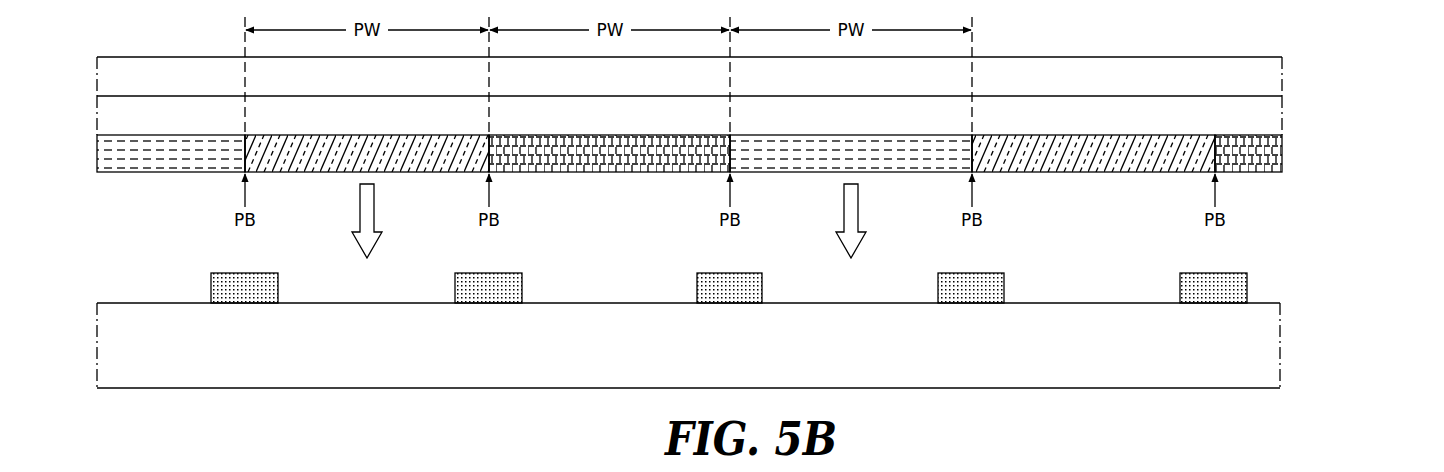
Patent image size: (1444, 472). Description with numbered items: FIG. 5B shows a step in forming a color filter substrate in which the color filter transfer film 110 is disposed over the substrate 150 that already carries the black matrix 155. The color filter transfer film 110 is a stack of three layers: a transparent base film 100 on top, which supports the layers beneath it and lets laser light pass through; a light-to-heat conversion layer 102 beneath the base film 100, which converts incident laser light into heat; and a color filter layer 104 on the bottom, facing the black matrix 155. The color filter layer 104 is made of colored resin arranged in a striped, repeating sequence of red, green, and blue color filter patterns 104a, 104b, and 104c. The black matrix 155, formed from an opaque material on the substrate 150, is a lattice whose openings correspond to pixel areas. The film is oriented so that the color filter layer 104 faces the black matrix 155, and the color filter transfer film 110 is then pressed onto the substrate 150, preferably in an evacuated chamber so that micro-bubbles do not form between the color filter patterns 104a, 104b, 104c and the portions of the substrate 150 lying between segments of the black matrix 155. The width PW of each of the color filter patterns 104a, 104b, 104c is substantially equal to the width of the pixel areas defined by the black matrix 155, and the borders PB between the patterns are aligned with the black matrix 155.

The base film 100 is at (1270, 78).
The light-to-heat conversion (LTHC) layer 102 is at (1270, 118).
The color filter layer 104 is at (734, 191).
The red color filter pattern 104a is at (310, 150).
The green color filter pattern 104b is at (593, 150).
The blue color filter pattern 104c is at (142, 150).
The color filter transfer film 110 is at (755, 152).
The substrate 150 is at (677, 356).
The black matrix 155 is at (1238, 287).